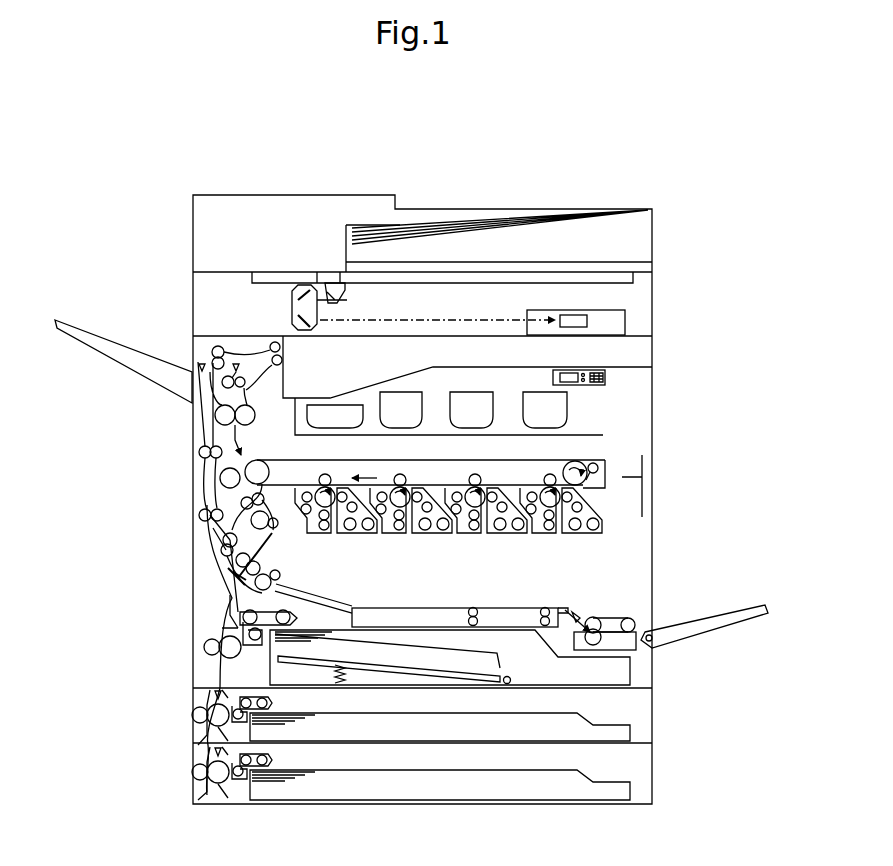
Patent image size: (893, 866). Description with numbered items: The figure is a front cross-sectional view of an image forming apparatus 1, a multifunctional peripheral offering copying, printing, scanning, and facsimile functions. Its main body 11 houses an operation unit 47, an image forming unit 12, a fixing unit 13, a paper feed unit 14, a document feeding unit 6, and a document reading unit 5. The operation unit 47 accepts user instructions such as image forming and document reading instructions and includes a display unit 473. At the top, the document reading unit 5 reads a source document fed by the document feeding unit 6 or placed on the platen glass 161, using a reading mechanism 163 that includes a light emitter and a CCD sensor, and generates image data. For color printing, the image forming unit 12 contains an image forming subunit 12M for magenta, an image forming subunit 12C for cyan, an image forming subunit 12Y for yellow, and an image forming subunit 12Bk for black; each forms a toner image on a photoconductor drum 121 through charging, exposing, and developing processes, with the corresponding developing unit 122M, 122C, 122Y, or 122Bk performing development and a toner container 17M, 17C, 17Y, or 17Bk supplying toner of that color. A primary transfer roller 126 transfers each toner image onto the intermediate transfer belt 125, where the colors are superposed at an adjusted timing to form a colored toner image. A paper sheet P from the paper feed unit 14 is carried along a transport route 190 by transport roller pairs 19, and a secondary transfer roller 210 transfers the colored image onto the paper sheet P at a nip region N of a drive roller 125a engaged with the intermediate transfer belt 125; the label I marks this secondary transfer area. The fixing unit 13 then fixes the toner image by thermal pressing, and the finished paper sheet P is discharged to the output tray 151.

The image forming apparatus 1 is at (716, 256).
The document reading unit 5 is at (178, 298).
The document feeding unit 6 is at (520, 196).
The main body 11 is at (660, 368).
The image forming unit 12 is at (622, 488).
The fixing unit 13 is at (211, 414).
The paper feed unit 14 is at (629, 712).
The transport roller pairs 19 is at (250, 562).
The operation unit 47 is at (606, 378).
The photoconductor drum 121 is at (546, 464).
The developing unit 122Bk is at (355, 535).
The developing unit 122Y is at (439, 533).
The developing unit 122C is at (514, 533).
The developing unit 122M is at (590, 533).
The image forming subunit 12Bk is at (347, 538).
The image forming subunit 12Y is at (418, 538).
The image forming subunit 12C is at (493, 538).
The image forming subunit 12M is at (569, 522).
The intermediate transfer belt 125 is at (572, 461).
The drive roller 125a is at (272, 447).
The primary transfer roller 126 is at (545, 485).
The output tray 151 is at (306, 397).
The platen glass 161 is at (537, 282).
The reading mechanism 163 is at (282, 312).
The toner container 17Bk is at (335, 405).
The toner container 17Y is at (400, 392).
The toner container 17C is at (471, 392).
The toner container 17M is at (537, 392).
The transport route 190 is at (212, 480).
The secondary transfer roller 210 is at (217, 488).
The display unit 473 is at (578, 370).
The nip region N is at (199, 452).
The paper sheet P is at (487, 645).
The secondary transfer position I is at (629, 486).